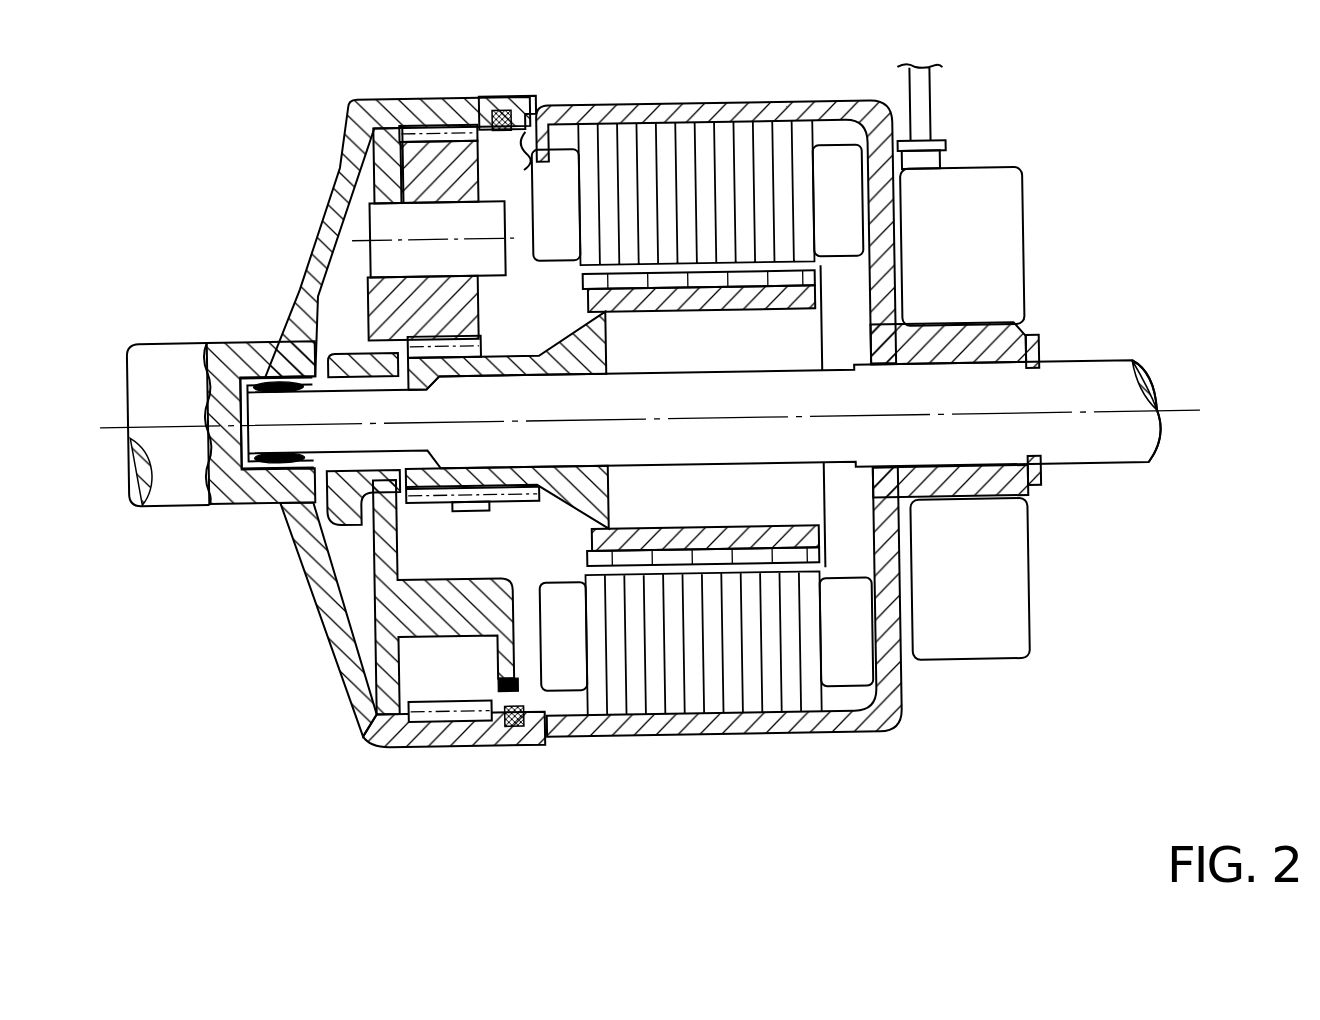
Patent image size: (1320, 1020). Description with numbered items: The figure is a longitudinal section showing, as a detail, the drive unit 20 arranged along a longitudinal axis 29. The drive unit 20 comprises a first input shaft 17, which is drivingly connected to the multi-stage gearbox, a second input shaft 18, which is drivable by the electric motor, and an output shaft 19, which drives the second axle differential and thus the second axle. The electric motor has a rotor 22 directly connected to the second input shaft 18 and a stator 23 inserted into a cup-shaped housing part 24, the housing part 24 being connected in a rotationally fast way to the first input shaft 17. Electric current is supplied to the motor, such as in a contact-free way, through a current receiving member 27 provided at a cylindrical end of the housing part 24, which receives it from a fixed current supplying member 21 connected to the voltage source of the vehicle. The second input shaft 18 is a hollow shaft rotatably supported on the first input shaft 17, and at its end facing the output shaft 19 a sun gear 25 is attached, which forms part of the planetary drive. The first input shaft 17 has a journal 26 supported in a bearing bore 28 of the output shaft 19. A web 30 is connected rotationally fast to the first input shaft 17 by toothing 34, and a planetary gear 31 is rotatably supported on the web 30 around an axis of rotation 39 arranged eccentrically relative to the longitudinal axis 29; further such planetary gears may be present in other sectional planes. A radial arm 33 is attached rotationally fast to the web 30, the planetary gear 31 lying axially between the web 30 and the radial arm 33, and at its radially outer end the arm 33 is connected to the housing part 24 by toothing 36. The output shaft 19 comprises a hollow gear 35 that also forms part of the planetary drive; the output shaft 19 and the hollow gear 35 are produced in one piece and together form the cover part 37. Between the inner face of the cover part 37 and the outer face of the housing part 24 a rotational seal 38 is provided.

The first input shaft 17 is at (1098, 360).
The second input shaft 18 is at (530, 352).
The output shaft 19 is at (167, 362).
The drive unit 20 is at (241, 143).
The current supplying member 21 is at (1000, 187).
The rotor 22 is at (747, 280).
The stator 23 is at (683, 153).
The housing part 24 is at (648, 107).
The sun gear 25 is at (457, 500).
The journal 26 is at (300, 320).
The current receiving member 27 is at (983, 333).
The bearing bore 28 is at (267, 343).
The longitudinal axis 29 is at (1177, 407).
The web 30 is at (372, 105).
The planetary gear 31 is at (440, 160).
The radial arm 33 is at (480, 165).
The toothing 34 is at (352, 372).
The hollow gear 35 is at (449, 713).
The toothing 36 is at (525, 148).
The cover part 37 is at (403, 110).
The rotational seal 38 is at (510, 138).
The axis of rotation 39 is at (383, 240).